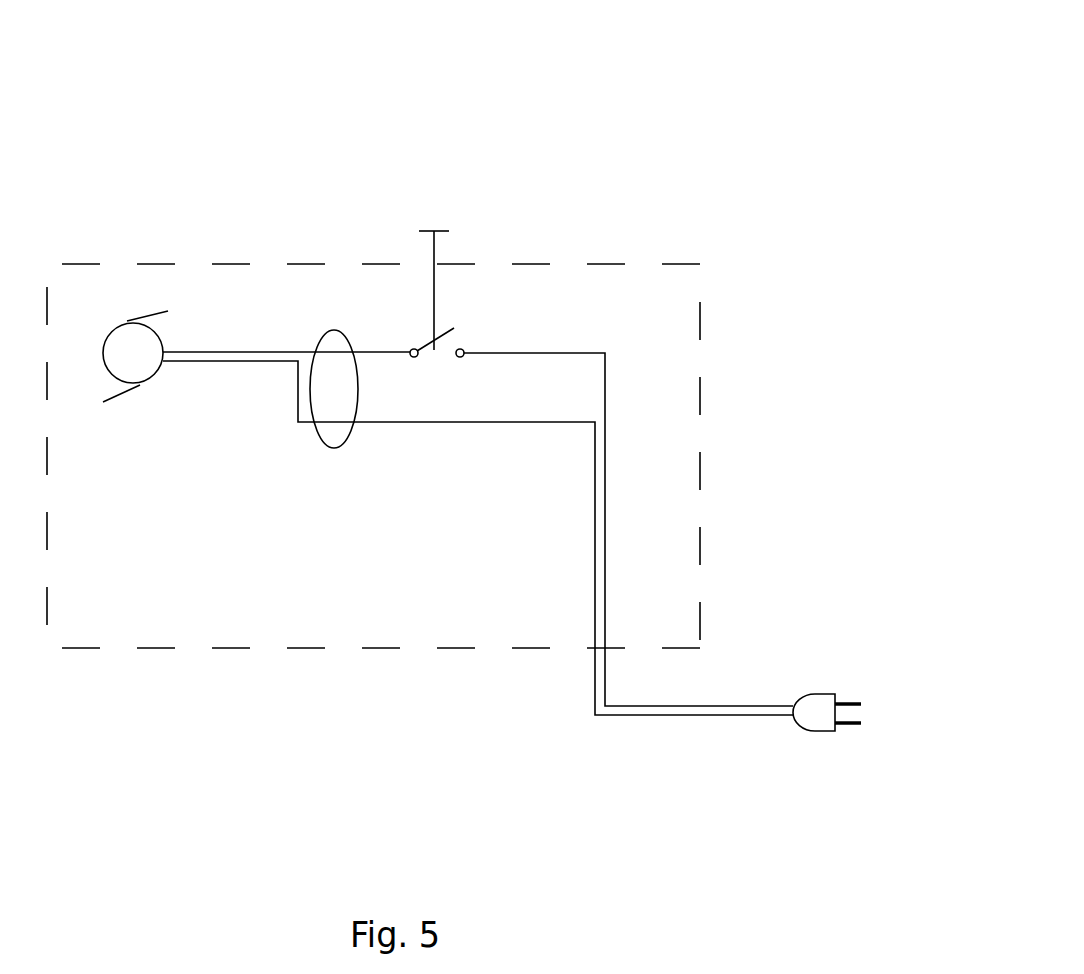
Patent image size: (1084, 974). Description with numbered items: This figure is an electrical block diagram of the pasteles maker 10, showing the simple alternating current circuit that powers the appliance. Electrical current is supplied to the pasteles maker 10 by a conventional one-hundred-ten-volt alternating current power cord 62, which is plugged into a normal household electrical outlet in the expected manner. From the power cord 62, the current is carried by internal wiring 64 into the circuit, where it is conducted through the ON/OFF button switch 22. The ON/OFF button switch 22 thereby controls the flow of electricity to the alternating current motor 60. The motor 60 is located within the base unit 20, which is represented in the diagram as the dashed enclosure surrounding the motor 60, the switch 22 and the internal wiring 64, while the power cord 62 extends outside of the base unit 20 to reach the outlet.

The pasteles maker 10 is at (716, 163).
The base unit 20 is at (702, 407).
The ON/OFF button switch 22 is at (443, 230).
The motor 60 is at (137, 318).
The alternating current (AC) power cord 62 is at (812, 700).
The internal wiring 64 is at (318, 437).